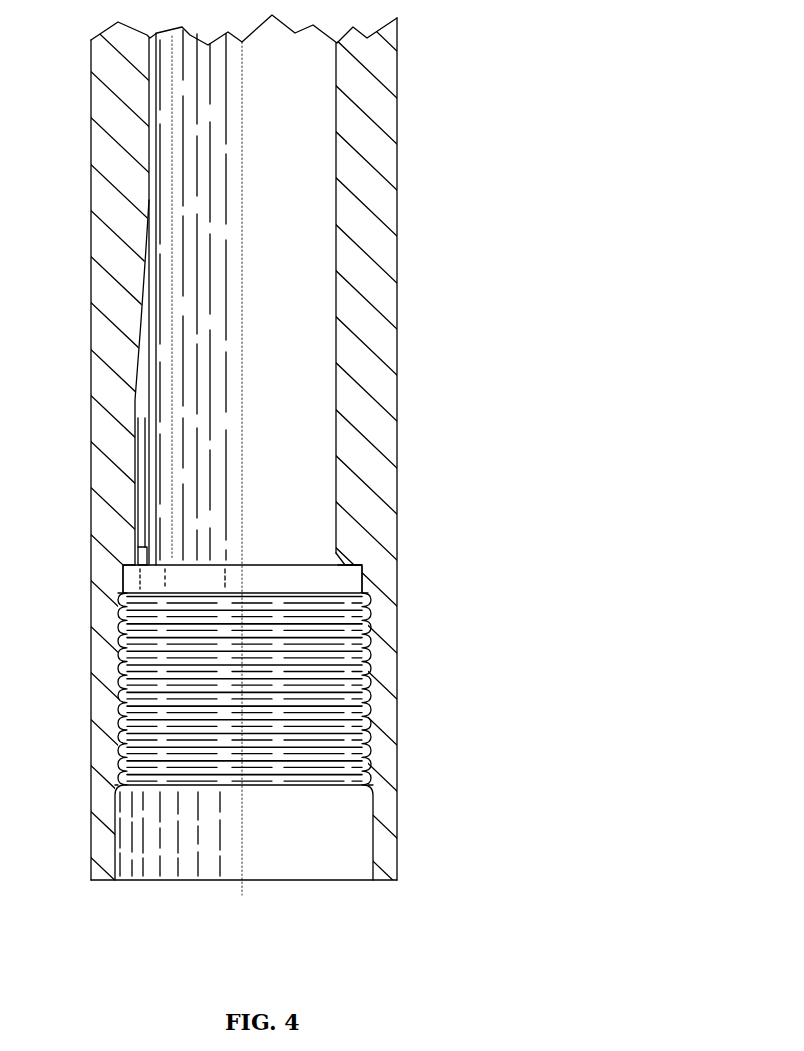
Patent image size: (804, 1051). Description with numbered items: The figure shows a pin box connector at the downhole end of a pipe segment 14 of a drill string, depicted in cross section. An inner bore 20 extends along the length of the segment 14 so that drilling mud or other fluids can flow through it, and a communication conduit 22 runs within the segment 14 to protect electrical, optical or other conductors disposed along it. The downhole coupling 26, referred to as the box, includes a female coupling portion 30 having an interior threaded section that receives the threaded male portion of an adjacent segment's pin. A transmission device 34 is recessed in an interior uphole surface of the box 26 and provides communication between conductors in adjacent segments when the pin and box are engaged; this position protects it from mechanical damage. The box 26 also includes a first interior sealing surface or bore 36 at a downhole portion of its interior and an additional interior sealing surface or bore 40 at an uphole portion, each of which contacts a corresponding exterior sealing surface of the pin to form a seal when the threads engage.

The pipe segment 14 is at (385, 252).
The inner bore 20 is at (313, 140).
The communication conduit 22 is at (140, 392).
The downhole coupling 26 is at (243, 840).
The female coupling portion 30 is at (140, 710).
The transmission device 34 is at (345, 580).
The first interior sealing surface 36 is at (113, 850).
The additional interior sealing surface 40 is at (127, 577).